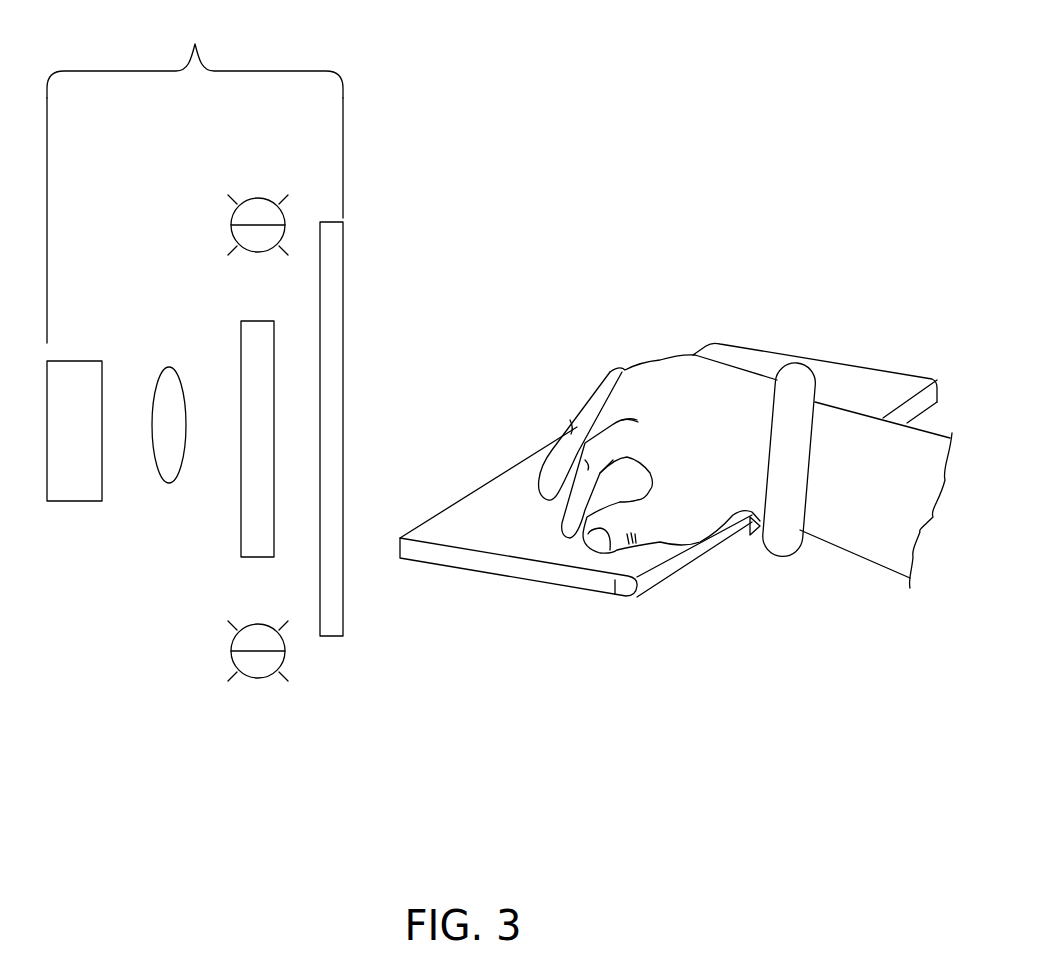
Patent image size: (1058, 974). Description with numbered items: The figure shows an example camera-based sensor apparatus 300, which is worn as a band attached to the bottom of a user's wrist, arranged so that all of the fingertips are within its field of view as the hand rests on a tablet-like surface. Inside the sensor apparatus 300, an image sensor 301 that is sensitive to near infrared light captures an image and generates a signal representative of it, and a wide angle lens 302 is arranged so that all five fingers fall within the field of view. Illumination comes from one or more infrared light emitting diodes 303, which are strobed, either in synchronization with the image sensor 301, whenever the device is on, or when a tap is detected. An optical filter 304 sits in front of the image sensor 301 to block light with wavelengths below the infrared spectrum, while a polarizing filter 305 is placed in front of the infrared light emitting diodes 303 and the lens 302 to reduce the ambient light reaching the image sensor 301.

The camera-based sensor apparatus 300 is at (767, 590).
The image sensor 301 is at (74, 361).
The wide angle lens 302 is at (169, 367).
The infrared light emitting diodes 303 is at (258, 198).
The optical filter 304 is at (241, 541).
The polarizing filter 305 is at (343, 280).